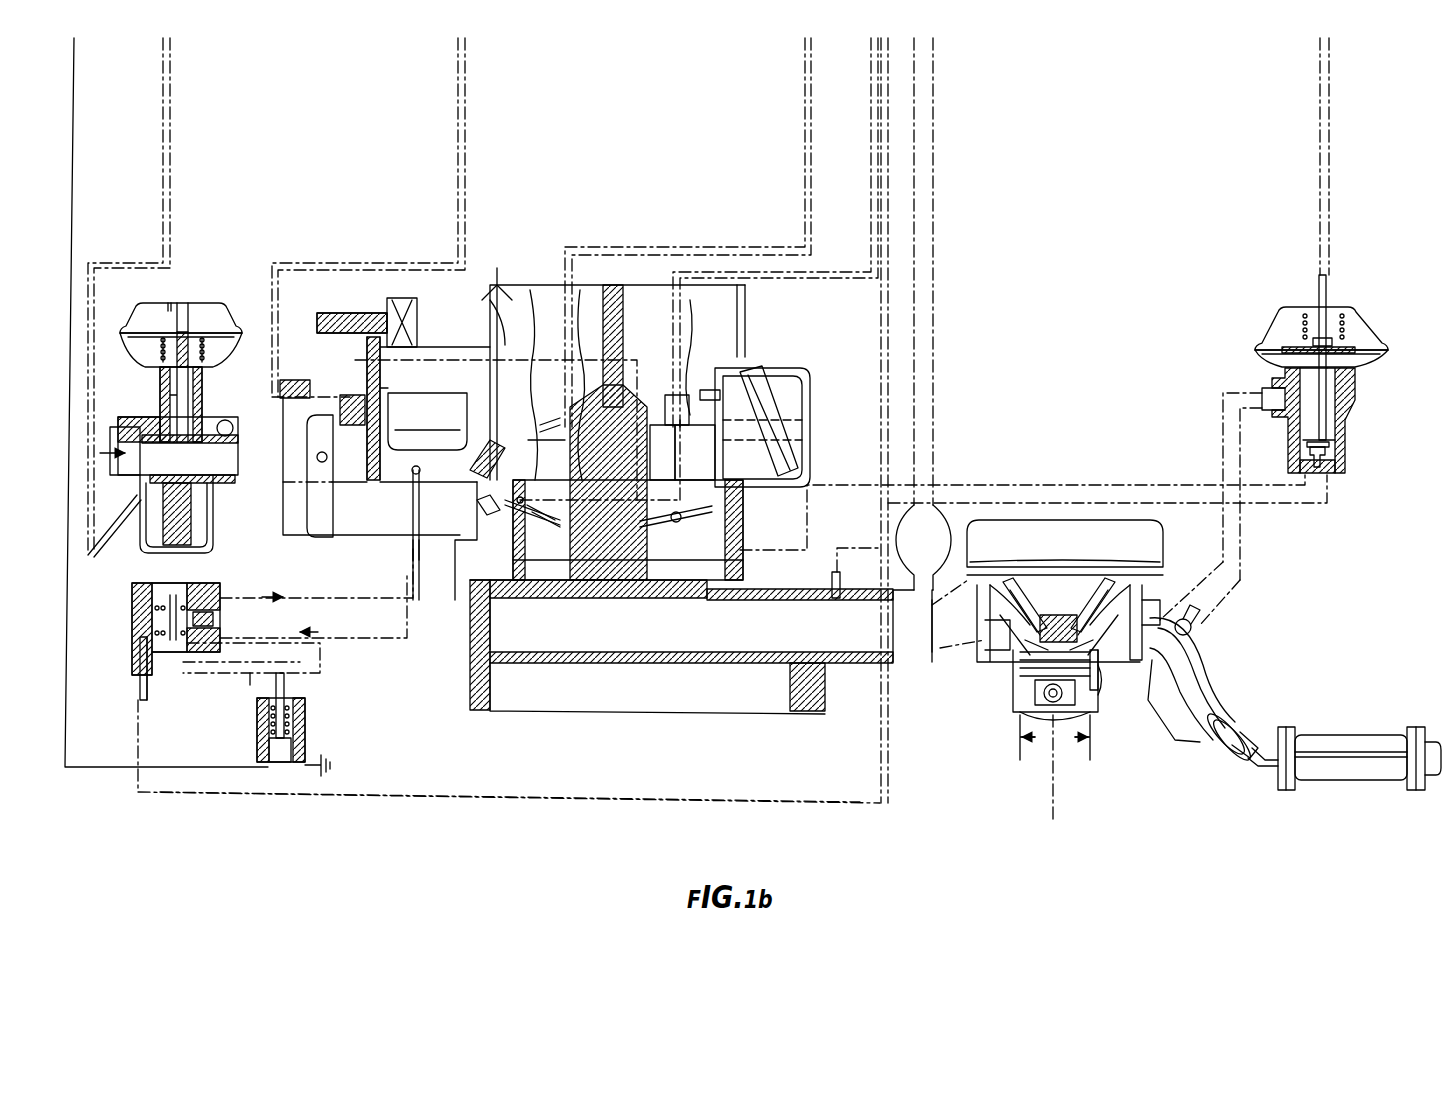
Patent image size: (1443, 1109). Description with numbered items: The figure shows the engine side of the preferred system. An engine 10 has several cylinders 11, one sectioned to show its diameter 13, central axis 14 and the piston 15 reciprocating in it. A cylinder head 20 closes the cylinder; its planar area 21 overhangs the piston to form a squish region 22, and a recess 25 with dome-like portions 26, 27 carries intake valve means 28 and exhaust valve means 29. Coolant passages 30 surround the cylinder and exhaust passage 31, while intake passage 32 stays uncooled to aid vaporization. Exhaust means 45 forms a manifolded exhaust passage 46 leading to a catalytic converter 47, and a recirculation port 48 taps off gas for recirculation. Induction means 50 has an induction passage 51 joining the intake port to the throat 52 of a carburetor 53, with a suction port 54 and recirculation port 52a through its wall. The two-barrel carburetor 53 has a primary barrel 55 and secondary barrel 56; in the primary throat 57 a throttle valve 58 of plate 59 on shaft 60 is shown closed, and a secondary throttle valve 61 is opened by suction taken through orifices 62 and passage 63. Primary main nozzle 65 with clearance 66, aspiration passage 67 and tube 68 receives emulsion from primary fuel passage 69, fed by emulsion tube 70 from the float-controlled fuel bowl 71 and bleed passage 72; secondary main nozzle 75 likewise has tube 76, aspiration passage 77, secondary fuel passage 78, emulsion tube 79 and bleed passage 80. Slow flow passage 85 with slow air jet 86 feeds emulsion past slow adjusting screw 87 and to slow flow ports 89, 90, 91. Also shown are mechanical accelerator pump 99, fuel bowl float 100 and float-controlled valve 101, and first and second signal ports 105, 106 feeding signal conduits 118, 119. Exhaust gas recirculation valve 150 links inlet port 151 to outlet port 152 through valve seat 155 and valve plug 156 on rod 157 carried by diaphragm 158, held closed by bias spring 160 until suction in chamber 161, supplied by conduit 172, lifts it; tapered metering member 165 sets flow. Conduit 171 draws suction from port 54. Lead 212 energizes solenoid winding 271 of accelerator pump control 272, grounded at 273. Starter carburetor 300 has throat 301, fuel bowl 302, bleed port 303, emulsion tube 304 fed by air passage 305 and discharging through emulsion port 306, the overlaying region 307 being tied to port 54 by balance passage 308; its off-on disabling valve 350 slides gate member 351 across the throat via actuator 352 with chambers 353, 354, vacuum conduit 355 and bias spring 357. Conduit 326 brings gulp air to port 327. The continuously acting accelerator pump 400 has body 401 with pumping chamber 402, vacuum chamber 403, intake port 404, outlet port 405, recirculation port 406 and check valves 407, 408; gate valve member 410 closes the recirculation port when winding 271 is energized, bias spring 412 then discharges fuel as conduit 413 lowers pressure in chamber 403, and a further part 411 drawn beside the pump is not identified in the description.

The engine 10 is at (970, 690).
The cylinders 11 is at (1170, 548).
The diameter 13 is at (1055, 737).
The central axis 14 is at (1060, 778).
The piston 15 is at (1095, 700).
The cylinder head 20 is at (1146, 606).
The planar area 21 is at (1012, 682).
The squish region 22 is at (1100, 670).
The recess 25 is at (1050, 578).
The dome-like portion 26 is at (1035, 700).
The dome-like portion 27 is at (1090, 722).
The intake valve means 28 is at (975, 610).
The exhaust valve means 29 is at (1090, 580).
The coolant passages 30 is at (1215, 610).
The exhaust passage 31 is at (1130, 692).
The intake passage 32 is at (968, 657).
The exhaust means 45 is at (1225, 698).
The manifolded exhaust passage 46 is at (1186, 656).
The catalytic converter 47 is at (1372, 733).
The recirculation port 48 is at (1195, 628).
The induction means 50 is at (690, 552).
The induction passage 51 is at (737, 647).
The throat 52 is at (695, 452).
The recirculation port 52a is at (705, 597).
The carburetor 53 is at (497, 268).
The suction port 54 is at (841, 578).
The primary barrel 55 is at (617, 379).
The secondary barrel 56 is at (690, 321).
The throat 57 is at (480, 520).
The throttle valve 58 is at (470, 648).
The plate 59 is at (535, 512).
The shaft 60 is at (520, 560).
The secondary throttle valve 61 is at (655, 522).
The orifices 62 is at (630, 452).
The passage 63 is at (600, 362).
The primary main nozzle 65 is at (590, 300).
The clearance 66 is at (527, 432).
The aspiration passage 67 is at (563, 300).
The tube 68 is at (495, 282).
The primary fuel passage 69 is at (478, 320).
The emulsion tube 70 is at (470, 390).
The float-controlled fuel bowl 71 is at (385, 426).
The bleed passage 72 is at (472, 345).
The secondary main nozzle 75 is at (690, 360).
The tube 76 is at (665, 395).
The aspiration passage 77 is at (661, 460).
The secondary fuel passage 78 is at (703, 390).
The emulsion tube 79 is at (745, 410).
The bleed passage 80 is at (735, 360).
The slow flow passage 85 is at (389, 436).
The slow air jet 86 is at (295, 378).
The slow adjusting screw 87 is at (480, 508).
The slow flow port 89 is at (420, 553).
The slow flow port 90 is at (385, 555).
The slow flow port 91 is at (401, 555).
The mechanical accelerator pump 99 is at (300, 428).
The fuel bowl float 100 is at (427, 436).
The float-controlled valve 101 is at (360, 362).
The first signal port 105 is at (512, 503).
The second signal port 106 is at (547, 458).
The signal conduit 118 is at (870, 80).
The signal conduit 119 is at (803, 78).
The exhaust gas recirculation valve 150 is at (1360, 400).
The inlet port 151 is at (1260, 390).
The outlet port 152 is at (1315, 478).
The valve seat 155 is at (1337, 448).
The valve plug 156 is at (1332, 442).
The rod 157 is at (1360, 387).
The diaphragm 158 is at (1370, 340).
The bias spring 160 is at (1345, 320).
The chamber 161 is at (1323, 324).
The metering member 165 is at (1305, 452).
The conduit 171 is at (893, 97).
The conduit 172 is at (1325, 80).
The lead 212 is at (75, 68).
The solenoid winding 271 is at (256, 735).
The accelerator pump control 272 is at (318, 711).
The ground 273 is at (326, 765).
The starter carburetor 300 is at (155, 387).
The throat 301 is at (190, 450).
The fuel bowl 302 is at (114, 545).
The bleed port 303 is at (98, 432).
The emulsion tube 304 is at (187, 555).
The air passage 305 is at (145, 540).
The emulsion port 306 is at (235, 477).
The overlaying region 307 is at (210, 505).
The balance passage 308 is at (172, 75).
The conduit 326 is at (935, 68).
The port 327 is at (945, 528).
The off-on disabling valve 350 is at (195, 392).
The gate member 351 is at (183, 424).
The actuator 352 is at (202, 305).
The chamber 353 is at (160, 318).
The chamber 354 is at (150, 348).
The vacuum conduit 355 is at (468, 75).
The bias spring 357 is at (215, 340).
The continuously acting accelerator pump 400 is at (232, 585).
The body 401 is at (133, 635).
The pumping chamber 402 is at (135, 610).
The vacuum chamber 403 is at (158, 680).
The intake port 404 is at (230, 633).
The outlet port 405 is at (316, 572).
The recirculation port 406 is at (250, 675).
The check valve 407 is at (184, 616).
The check valve 408 is at (205, 655).
The gate valve member 410 is at (290, 687).
The plunger 411 is at (135, 695).
The bias spring 412 is at (128, 665).
The conduit 413 is at (535, 797).